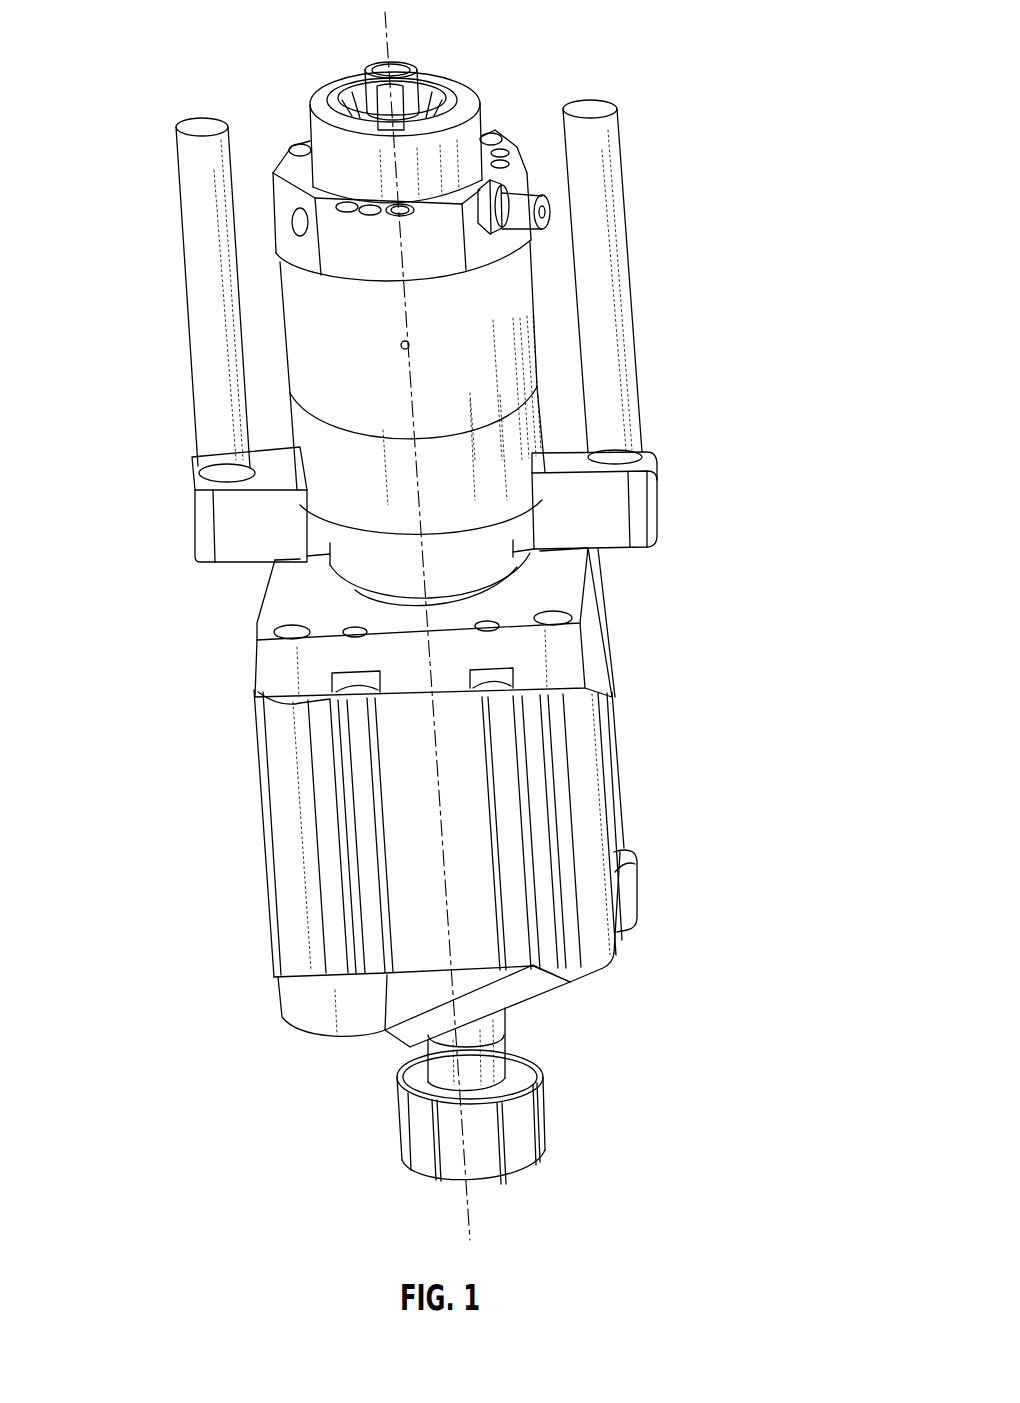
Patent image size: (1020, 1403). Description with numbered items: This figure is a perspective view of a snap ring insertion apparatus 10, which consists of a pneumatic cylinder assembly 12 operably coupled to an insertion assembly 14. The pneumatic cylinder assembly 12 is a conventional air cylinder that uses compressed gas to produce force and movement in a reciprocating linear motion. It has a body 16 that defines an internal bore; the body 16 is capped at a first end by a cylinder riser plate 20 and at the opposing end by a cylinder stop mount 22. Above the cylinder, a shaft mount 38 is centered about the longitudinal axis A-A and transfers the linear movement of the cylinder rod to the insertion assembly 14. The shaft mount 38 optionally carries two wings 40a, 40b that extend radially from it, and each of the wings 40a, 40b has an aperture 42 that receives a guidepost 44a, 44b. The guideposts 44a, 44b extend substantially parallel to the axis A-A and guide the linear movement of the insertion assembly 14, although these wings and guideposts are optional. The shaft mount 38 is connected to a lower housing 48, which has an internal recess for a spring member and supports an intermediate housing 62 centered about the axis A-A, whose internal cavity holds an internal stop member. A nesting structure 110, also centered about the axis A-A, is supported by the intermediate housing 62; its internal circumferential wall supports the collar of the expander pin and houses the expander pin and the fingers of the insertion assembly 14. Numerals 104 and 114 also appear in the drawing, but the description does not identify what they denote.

The snap ring insertion apparatus 10 is at (690, 42).
The pneumatic cylinder assembly 12 is at (456, 836).
The insertion assembly 14 is at (497, 130).
The body 16 is at (400, 807).
The cylinder riser plate 20 is at (570, 582).
The cylinder stop mount 22 is at (300, 1023).
The shaft mount 38 is at (424, 509).
The wing 40a is at (197, 560).
The wing 40b is at (657, 527).
The aperture 42 is at (197, 477).
The guidepost 44a is at (186, 300).
The guidepost 44b is at (615, 346).
The lower housing 48 is at (535, 440).
The intermediate housing 62 is at (503, 337).
The collet 104 is at (396, 62).
The nesting structure 110 is at (312, 128).
The port fitting 114 is at (503, 182).